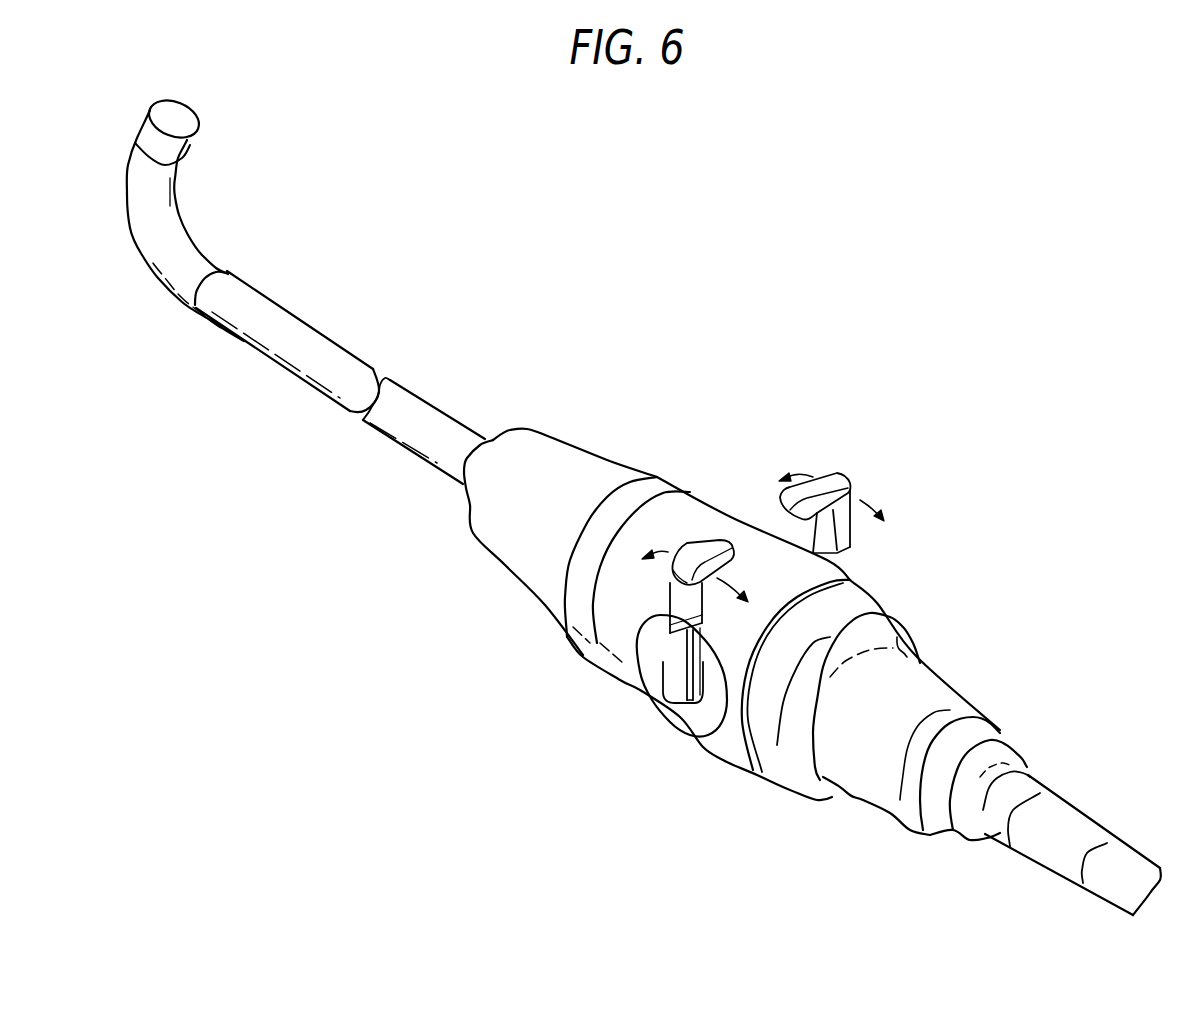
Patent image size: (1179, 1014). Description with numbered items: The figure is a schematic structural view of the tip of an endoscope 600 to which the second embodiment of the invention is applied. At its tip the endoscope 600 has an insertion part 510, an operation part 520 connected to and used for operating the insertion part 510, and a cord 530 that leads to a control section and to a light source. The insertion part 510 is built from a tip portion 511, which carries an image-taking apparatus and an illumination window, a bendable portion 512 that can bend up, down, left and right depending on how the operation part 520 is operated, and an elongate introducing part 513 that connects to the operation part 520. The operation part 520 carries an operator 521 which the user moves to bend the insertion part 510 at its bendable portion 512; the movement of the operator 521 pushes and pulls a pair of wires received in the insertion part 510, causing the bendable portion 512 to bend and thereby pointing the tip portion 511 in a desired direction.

The endoscope 600 is at (982, 421).
The insertion part 510 is at (525, 402).
The tip portion 511 is at (185, 152).
The bendable portion 512 is at (177, 205).
The elongate introducing part 513 is at (262, 292).
The operation part 520 is at (727, 753).
The operator 521 is at (827, 477).
The cord 530 is at (1083, 817).